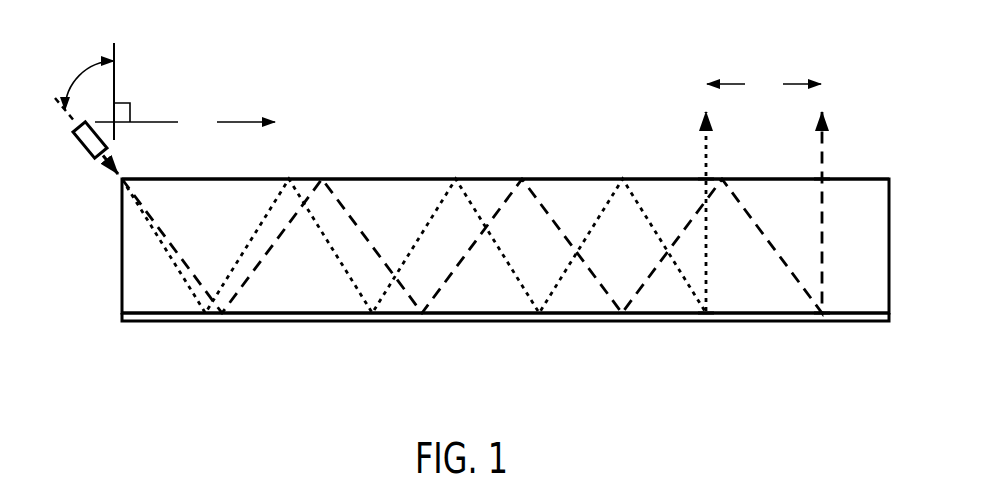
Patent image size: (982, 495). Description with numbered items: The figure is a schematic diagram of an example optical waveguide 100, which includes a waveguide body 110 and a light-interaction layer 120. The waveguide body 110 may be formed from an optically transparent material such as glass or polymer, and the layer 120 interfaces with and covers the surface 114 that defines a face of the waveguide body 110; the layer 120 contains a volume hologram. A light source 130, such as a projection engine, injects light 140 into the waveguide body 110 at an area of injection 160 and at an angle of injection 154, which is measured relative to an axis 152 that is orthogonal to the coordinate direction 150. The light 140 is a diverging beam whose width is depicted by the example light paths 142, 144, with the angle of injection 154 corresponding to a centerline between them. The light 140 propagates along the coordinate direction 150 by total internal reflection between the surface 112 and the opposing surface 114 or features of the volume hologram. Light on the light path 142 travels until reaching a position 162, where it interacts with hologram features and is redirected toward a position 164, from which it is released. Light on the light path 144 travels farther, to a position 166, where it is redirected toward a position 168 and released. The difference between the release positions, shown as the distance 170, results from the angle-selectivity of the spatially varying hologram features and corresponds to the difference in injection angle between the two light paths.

The optical waveguide 100 is at (474, 258).
The waveguide body 110 is at (133, 228).
The surface 112 is at (388, 178).
The surface 114 is at (122, 313).
The light-interaction layer 120 is at (582, 315).
The light source 130 is at (80, 137).
The light 140 is at (102, 168).
The light path 142 is at (430, 212).
The light path 144 is at (472, 212).
The coordinate direction 150 is at (185, 119).
The axis 152 is at (112, 80).
The angle of injection 154 is at (89, 85).
The area of injection 160 is at (116, 185).
The position 162 is at (698, 325).
The position 164 is at (700, 173).
The position 166 is at (818, 325).
The position 168 is at (832, 173).
The difference in position of released light 170 is at (764, 85).